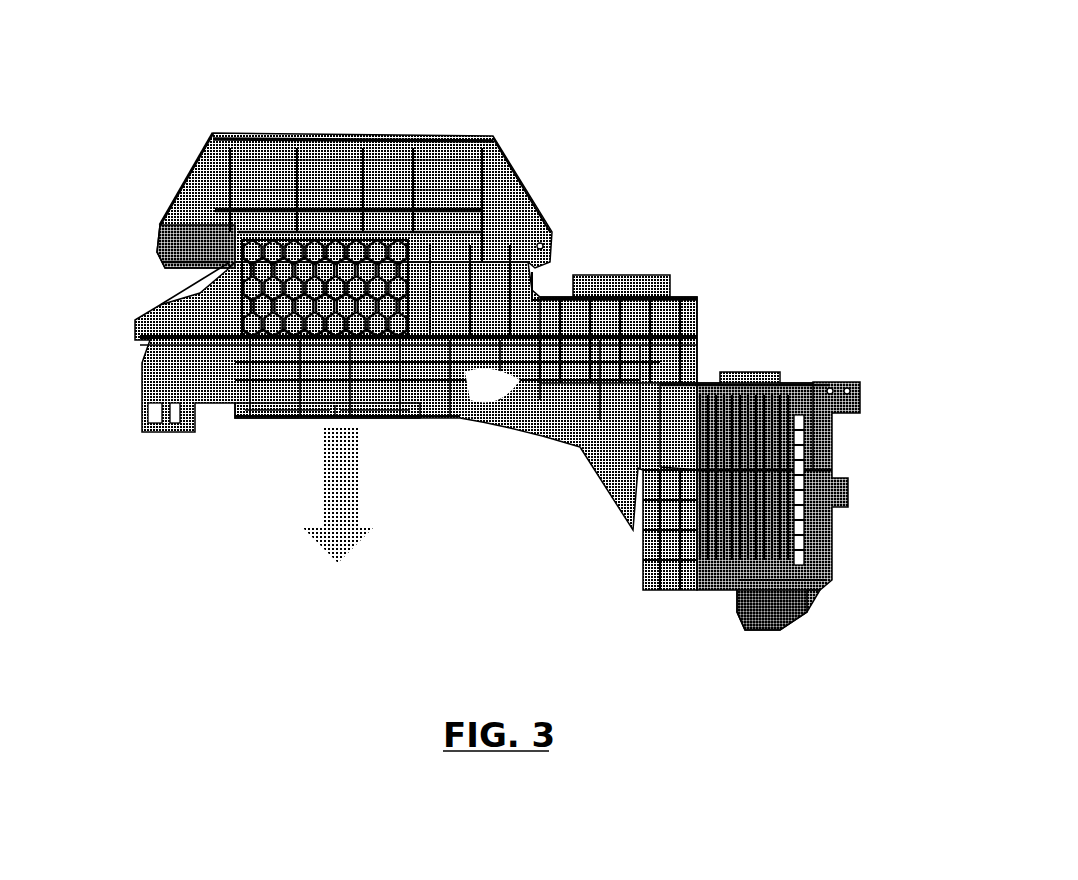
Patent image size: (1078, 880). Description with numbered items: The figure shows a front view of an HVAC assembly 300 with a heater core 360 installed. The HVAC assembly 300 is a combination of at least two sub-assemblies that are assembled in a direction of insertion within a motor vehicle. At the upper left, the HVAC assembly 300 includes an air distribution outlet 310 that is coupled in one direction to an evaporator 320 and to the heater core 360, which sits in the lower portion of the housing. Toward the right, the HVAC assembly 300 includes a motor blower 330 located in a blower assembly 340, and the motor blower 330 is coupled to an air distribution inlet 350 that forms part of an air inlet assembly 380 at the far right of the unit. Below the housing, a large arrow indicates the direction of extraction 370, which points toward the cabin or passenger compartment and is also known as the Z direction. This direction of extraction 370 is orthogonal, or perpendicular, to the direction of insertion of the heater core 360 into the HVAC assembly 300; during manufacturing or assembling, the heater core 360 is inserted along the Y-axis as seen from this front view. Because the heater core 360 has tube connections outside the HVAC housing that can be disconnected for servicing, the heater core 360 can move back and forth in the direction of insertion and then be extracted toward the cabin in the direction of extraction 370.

The HVAC assembly 300 is at (178, 84).
The air distribution outlet 310 is at (544, 185).
The evaporator 320 is at (156, 274).
The motor blower 330 is at (700, 297).
The blower assembly 340 is at (713, 357).
The air distribution inlet 350 is at (842, 449).
The heater core 360 is at (248, 430).
The direction of extraction 370 is at (382, 529).
The air inlet assembly 380 is at (842, 578).